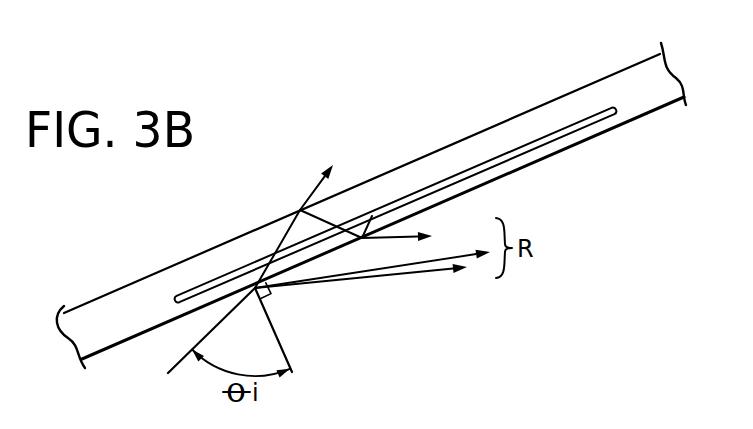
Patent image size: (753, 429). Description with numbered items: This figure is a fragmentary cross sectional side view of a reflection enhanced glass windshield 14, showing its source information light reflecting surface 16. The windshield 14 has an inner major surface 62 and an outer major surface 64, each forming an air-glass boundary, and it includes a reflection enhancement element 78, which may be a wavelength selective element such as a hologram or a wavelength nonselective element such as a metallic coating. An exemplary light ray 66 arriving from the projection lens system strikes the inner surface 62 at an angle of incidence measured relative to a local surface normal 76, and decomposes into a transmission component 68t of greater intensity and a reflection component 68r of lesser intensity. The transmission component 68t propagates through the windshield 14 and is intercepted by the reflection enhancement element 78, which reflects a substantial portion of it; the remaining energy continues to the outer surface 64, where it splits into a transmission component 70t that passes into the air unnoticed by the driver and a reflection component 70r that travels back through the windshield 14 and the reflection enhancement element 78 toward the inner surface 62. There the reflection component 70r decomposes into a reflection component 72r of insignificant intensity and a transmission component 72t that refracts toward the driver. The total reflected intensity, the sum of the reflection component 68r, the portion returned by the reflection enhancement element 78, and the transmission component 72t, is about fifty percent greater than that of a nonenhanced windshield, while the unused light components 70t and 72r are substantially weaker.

The windshield 14 is at (388, 184).
The outer major surface 64 is at (630, 65).
The inner major surface 62 is at (652, 114).
The reflective surface 16 is at (582, 129).
The reflection enhancement element 78 is at (518, 128).
The light ray 66 is at (183, 370).
The local surface normal 76 is at (285, 355).
The transmission component 68t is at (255, 268).
The transmission component 70t is at (309, 195).
The reflection component 70r is at (323, 219).
The transmission component 72t is at (402, 232).
The reflection component 72r is at (372, 234).
The reflection component 68r is at (315, 284).